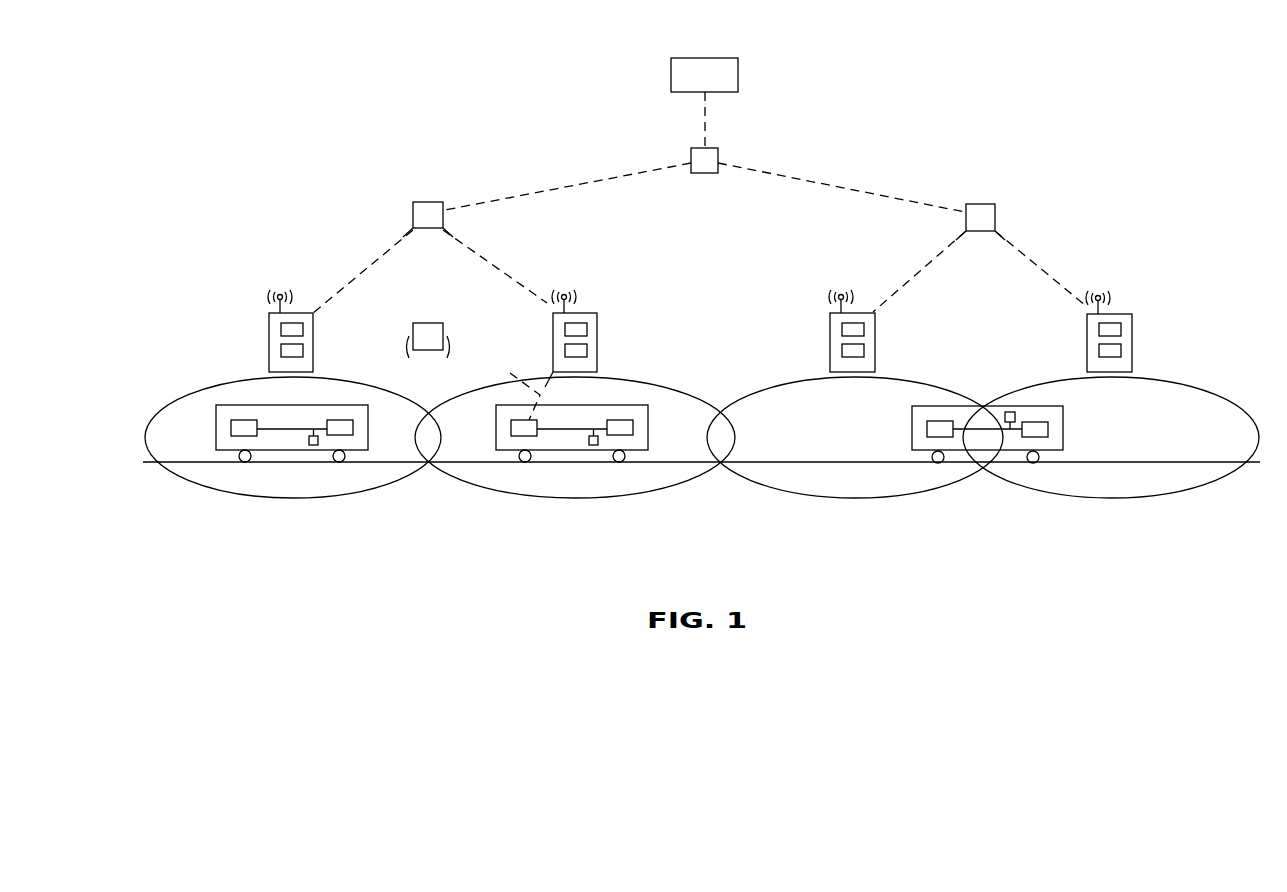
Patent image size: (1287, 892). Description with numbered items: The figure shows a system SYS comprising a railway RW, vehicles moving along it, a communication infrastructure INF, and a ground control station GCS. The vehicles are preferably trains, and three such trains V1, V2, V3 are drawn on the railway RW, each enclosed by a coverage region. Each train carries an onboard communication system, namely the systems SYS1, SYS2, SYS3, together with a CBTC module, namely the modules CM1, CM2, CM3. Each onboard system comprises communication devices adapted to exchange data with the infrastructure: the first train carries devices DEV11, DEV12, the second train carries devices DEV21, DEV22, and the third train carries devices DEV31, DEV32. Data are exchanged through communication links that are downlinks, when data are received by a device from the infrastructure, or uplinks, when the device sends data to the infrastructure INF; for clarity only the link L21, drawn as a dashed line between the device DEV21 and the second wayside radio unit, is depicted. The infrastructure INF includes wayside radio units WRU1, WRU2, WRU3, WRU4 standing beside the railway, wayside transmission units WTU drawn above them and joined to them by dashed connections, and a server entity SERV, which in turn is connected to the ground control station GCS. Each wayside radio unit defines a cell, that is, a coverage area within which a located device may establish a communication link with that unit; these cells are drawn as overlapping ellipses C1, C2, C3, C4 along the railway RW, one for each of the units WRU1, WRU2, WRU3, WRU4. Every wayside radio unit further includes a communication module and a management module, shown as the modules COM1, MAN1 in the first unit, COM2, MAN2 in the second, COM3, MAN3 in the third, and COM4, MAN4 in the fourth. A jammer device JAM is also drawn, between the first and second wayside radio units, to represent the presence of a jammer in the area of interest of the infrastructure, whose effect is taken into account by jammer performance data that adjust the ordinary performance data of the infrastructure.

The ground control station GCS is at (704, 90).
The system SYS is at (950, 100).
The communication infrastructure INF is at (800, 138).
The server entity SERV is at (704, 177).
The wayside transmission unit WTU is at (699, 243).
The jammer device JAM is at (430, 323).
The wayside radio unit WRU1 is at (266, 338).
The wayside radio unit WRU2 is at (550, 342).
The wayside radio unit WRU3 is at (827, 340).
The wayside radio unit WRU4 is at (1083, 340).
The communication module COM1 is at (304, 327).
The communication module COM2 is at (587, 327).
The communication module COM3 is at (864, 328).
The communication module COM4 is at (1121, 330).
The management module MAN1 is at (304, 350).
The management module MAN2 is at (587, 352).
The management module MAN3 is at (864, 352).
The management module MAN4 is at (1121, 352).
The communication link L21 is at (515, 385).
The cell C1 is at (385, 485).
The cell C2 is at (675, 487).
The cell C3 is at (773, 490).
The cell C4 is at (1203, 487).
The railway RW is at (202, 473).
The vehicle V1 is at (216, 433).
The vehicle V2 is at (648, 427).
The vehicle V3 is at (1064, 428).
The onboard communication system SYS1 is at (280, 443).
The onboard communication system SYS2 is at (562, 443).
The onboard communication system SYS3 is at (978, 445).
The communication device DEV11 is at (240, 437).
The communication device DEV12 is at (340, 437).
The communication device DEV21 is at (520, 437).
The communication device DEV22 is at (620, 437).
The communication device DEV31 is at (937, 438).
The communication device DEV32 is at (1038, 437).
The CBTC module CM1 is at (314, 445).
The CBTC module CM2 is at (594, 445).
The CBTC module CM3 is at (1013, 410).